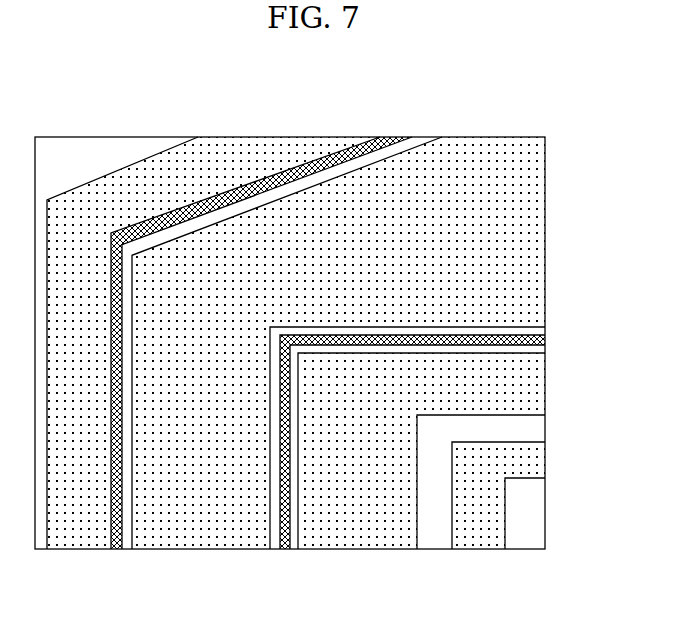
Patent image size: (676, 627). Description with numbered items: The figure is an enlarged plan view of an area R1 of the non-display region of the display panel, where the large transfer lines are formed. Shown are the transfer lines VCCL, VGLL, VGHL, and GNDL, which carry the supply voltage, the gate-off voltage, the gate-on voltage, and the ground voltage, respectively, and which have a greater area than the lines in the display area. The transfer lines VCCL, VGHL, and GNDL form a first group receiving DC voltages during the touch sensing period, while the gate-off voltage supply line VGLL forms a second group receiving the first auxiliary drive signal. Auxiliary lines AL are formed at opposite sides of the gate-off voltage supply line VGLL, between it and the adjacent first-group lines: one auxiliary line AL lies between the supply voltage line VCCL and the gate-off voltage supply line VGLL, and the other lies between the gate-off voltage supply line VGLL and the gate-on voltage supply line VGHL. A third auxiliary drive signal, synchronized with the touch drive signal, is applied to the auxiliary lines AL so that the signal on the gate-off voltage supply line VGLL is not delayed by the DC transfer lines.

The area R1 is at (134, 113).
The auxiliary lines AL is at (370, 137).
The supply voltage transfer line VCCL is at (213, 358).
The gate-off voltage supply line VGLL is at (338, 358).
The gate-on voltage supply line VGHL is at (421, 466).
The ground voltage transfer line GNDL is at (498, 510).